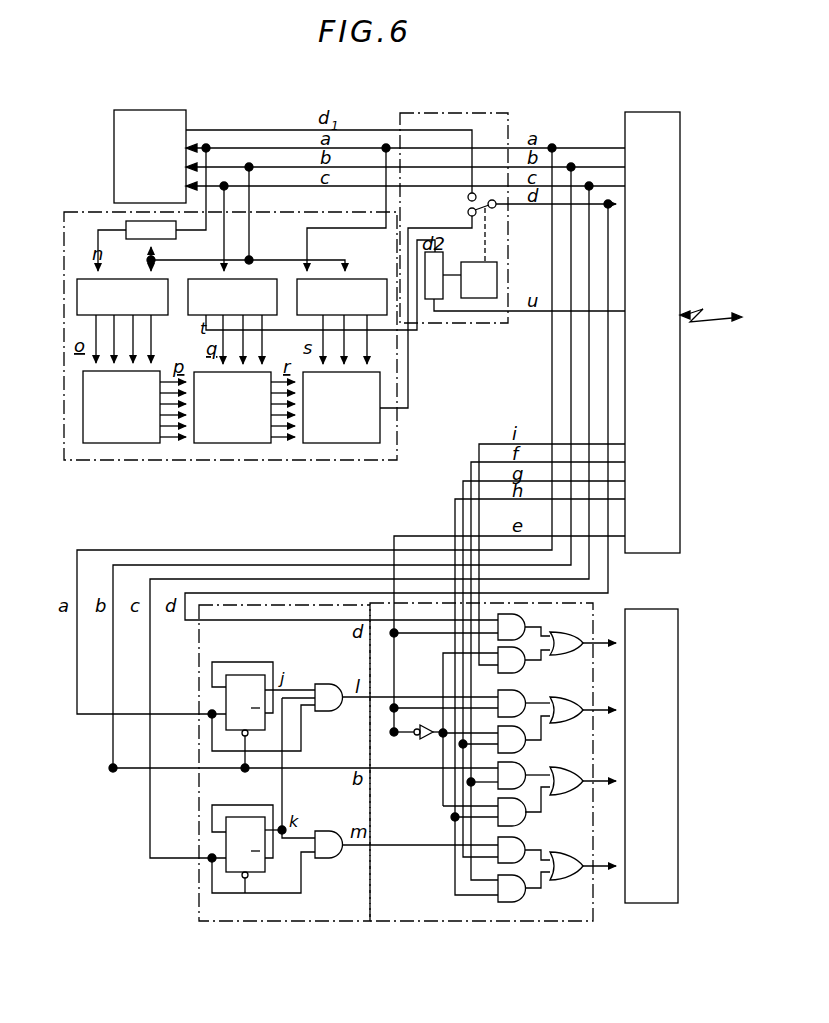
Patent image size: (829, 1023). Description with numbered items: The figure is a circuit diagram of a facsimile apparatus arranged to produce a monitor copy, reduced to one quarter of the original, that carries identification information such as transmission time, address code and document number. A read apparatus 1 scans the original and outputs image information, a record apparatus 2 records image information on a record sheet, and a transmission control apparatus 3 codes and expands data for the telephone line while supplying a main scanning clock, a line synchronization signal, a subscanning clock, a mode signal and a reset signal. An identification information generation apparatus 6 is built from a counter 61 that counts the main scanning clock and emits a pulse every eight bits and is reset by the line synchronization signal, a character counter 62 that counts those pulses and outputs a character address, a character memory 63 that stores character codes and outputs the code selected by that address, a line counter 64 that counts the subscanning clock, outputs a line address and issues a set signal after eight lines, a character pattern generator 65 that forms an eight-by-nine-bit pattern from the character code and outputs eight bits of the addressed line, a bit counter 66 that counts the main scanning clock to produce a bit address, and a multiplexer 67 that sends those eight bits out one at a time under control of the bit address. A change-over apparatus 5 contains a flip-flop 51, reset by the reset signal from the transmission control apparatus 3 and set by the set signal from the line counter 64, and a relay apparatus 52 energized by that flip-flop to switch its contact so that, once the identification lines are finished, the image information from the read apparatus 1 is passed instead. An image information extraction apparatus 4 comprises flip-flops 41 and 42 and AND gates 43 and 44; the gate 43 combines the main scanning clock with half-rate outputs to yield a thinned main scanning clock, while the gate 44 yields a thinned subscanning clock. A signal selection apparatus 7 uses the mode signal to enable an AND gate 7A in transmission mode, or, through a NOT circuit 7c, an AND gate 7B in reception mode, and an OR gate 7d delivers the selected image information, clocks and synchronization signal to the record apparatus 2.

The read apparatus 1 is at (160, 110).
The record apparatus 2 is at (650, 609).
The transmission control apparatus 3 is at (648, 112).
The image information extraction apparatus 4 is at (348, 921).
The change-over apparatus 5 is at (474, 113).
The identification information generation apparatus 6 is at (163, 460).
The signal selection apparatus 7 is at (456, 921).
The AND gate 7A is at (527, 628).
The AND gate 7B is at (527, 670).
The NOT circuit 7c is at (444, 717).
The OR gate 7d is at (578, 652).
The flip-flop 41 is at (248, 675).
The flip-flop 42 is at (258, 817).
The AND gate 43 is at (325, 684).
The AND gate 44 is at (328, 831).
The flip-flop 51 is at (443, 262).
The relay apparatus 52 is at (497, 262).
The counter 61 is at (176, 236).
The character counter 62 is at (168, 315).
The character memory 63 is at (106, 443).
The line counter 64 is at (270, 279).
The character pattern generator 65 is at (228, 443).
The bit counter 66 is at (363, 279).
The multiplexer 67 is at (343, 443).